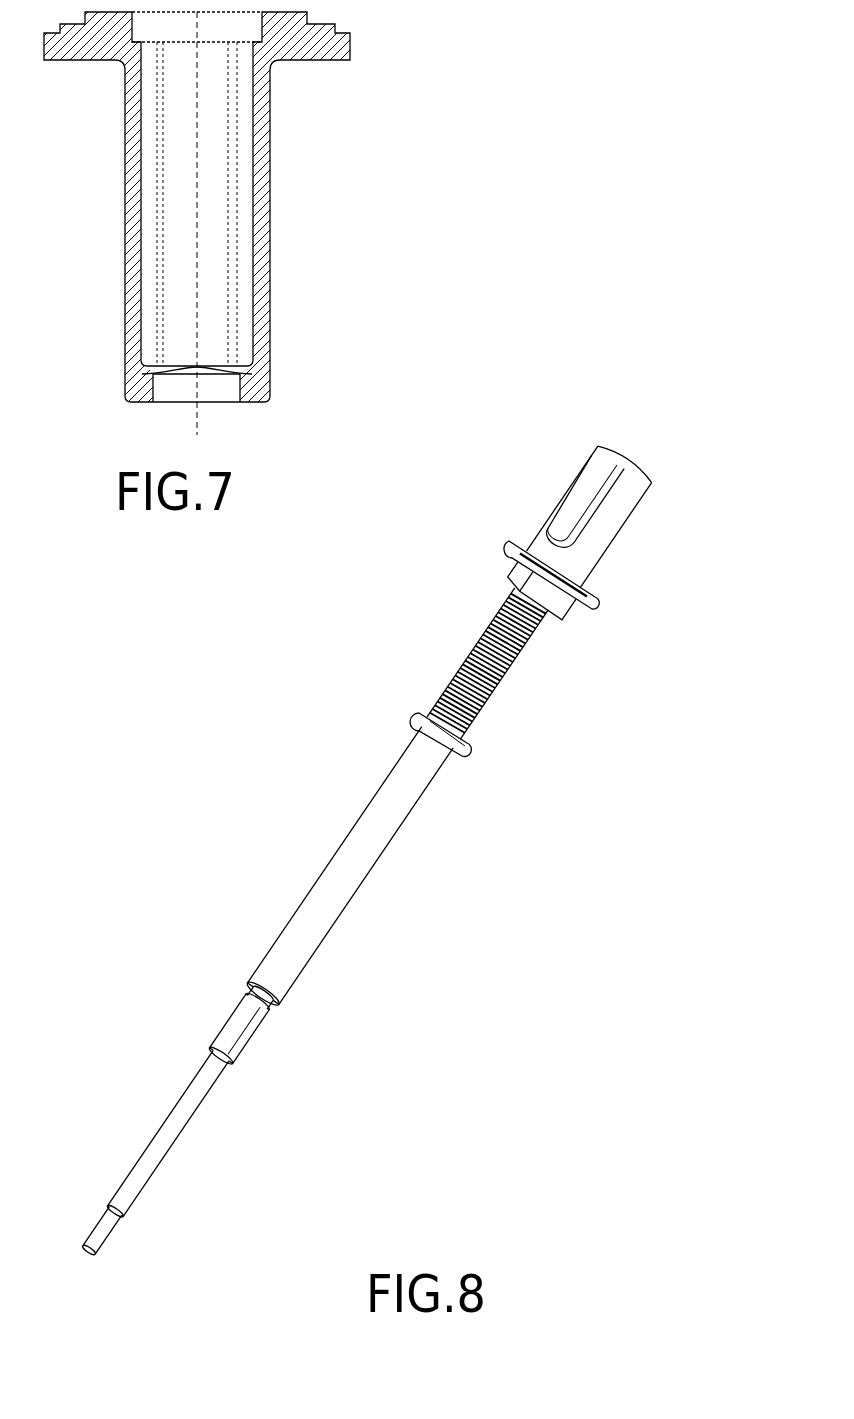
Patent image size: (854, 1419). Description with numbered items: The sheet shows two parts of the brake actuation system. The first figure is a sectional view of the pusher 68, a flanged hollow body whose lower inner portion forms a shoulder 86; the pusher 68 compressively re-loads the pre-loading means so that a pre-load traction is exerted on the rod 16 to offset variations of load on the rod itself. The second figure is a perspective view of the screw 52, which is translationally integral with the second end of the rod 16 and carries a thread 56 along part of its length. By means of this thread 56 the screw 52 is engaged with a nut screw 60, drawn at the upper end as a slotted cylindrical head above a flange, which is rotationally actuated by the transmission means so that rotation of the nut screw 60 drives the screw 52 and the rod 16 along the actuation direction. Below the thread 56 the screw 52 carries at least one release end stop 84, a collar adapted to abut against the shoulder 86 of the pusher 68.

In FIG. 7, the pusher 68 is at (327, 165).
In FIG. 7, the shoulder 86 is at (127, 397).
In FIG. 8, the rod 16 is at (192, 1115).
In FIG. 8, the screw 52 is at (440, 772).
In FIG. 8, the thread 56 is at (485, 635).
In FIG. 8, the nut screw 60 is at (640, 509).
In FIG. 8, the release end stop 84 is at (441, 712).